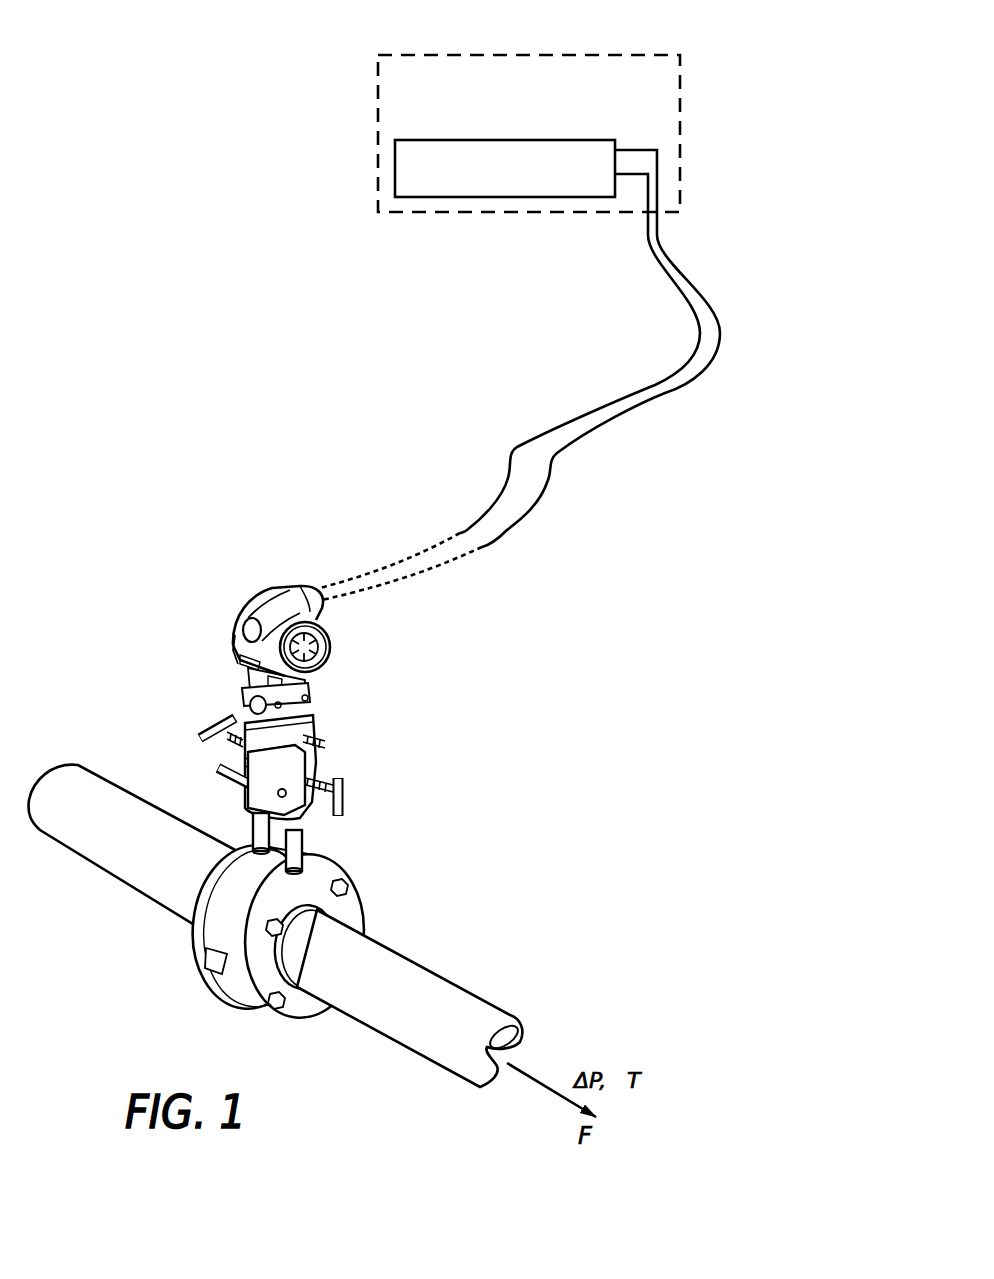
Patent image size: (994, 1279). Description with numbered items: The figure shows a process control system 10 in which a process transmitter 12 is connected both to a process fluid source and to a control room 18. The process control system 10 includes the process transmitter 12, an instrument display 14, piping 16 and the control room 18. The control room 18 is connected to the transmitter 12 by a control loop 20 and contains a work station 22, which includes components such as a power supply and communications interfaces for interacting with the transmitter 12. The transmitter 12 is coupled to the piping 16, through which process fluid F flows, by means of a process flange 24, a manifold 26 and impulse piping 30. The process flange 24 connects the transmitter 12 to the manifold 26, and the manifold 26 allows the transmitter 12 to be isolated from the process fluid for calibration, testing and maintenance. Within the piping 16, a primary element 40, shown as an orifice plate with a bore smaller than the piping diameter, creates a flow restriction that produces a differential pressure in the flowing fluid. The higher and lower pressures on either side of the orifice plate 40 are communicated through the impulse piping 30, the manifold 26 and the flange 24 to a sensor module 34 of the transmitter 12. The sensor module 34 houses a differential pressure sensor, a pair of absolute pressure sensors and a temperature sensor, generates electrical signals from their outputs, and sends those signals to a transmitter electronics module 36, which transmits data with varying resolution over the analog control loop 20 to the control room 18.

The process control system 10 is at (188, 276).
The process transmitter 12 is at (263, 586).
The instrument display 14 is at (314, 650).
The piping 16 is at (275, 926).
The control room 18 is at (625, 52).
The control loop 20 is at (660, 387).
The work station 22 is at (462, 140).
The process flange 24 is at (323, 717).
The manifold 26 is at (337, 752).
The impulse piping 30 is at (316, 843).
The sensor module 34 is at (309, 744).
The transmitter electronics module 36 is at (232, 650).
The primary element 40 is at (212, 967).